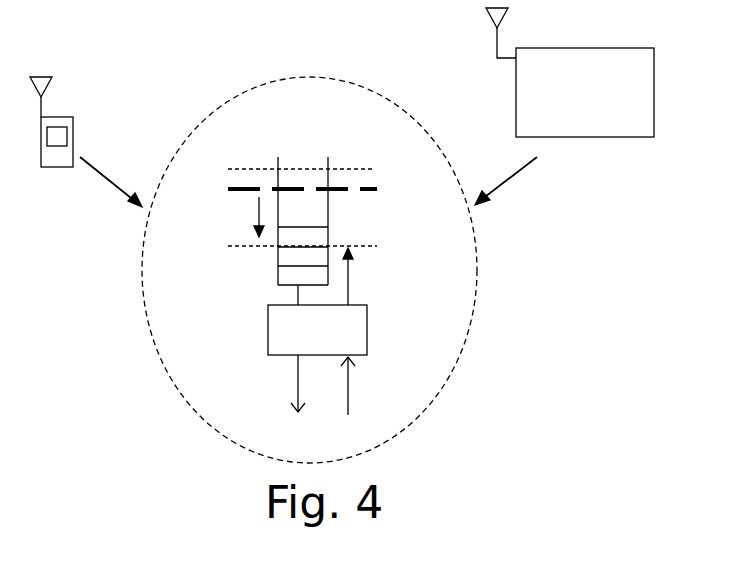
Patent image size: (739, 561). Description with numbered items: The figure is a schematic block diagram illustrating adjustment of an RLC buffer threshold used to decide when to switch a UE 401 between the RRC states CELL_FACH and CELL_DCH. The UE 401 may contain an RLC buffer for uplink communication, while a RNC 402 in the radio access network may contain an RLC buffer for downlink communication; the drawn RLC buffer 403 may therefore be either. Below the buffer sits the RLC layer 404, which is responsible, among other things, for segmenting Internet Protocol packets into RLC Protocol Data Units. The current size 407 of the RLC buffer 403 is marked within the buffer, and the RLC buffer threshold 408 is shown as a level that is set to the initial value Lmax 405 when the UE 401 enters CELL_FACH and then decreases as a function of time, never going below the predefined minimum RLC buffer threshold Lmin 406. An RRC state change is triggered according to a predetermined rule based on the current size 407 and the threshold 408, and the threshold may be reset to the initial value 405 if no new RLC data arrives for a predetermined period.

The UE 401 is at (70, 132).
The RNC 402 is at (605, 135).
The RLC buffer 403 is at (328, 160).
The RLC layer 404 is at (367, 330).
The initial value Lmax 405 is at (376, 170).
The predefined minimum RLC buffer threshold 406 is at (376, 246).
The current size of the RLC buffer 407 is at (308, 227).
The RLC buffer threshold 408 is at (237, 190).